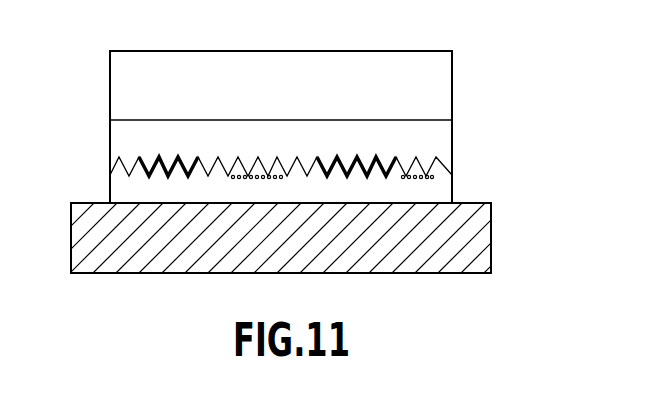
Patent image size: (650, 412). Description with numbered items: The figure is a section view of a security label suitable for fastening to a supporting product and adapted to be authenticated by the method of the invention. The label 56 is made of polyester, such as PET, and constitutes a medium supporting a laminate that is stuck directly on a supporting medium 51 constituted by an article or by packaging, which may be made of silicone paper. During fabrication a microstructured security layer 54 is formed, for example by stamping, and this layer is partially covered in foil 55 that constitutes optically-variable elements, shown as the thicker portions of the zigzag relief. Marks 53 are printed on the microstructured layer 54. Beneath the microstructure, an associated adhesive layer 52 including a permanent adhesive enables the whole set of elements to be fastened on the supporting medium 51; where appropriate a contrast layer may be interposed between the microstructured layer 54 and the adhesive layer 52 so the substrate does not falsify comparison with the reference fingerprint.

The supporting medium 51 is at (467, 250).
The adhesive layer 52 is at (123, 190).
The marks 53 is at (423, 178).
The microstructured security layer 54 is at (447, 145).
The foil 55 is at (152, 160).
The label 56 is at (438, 80).